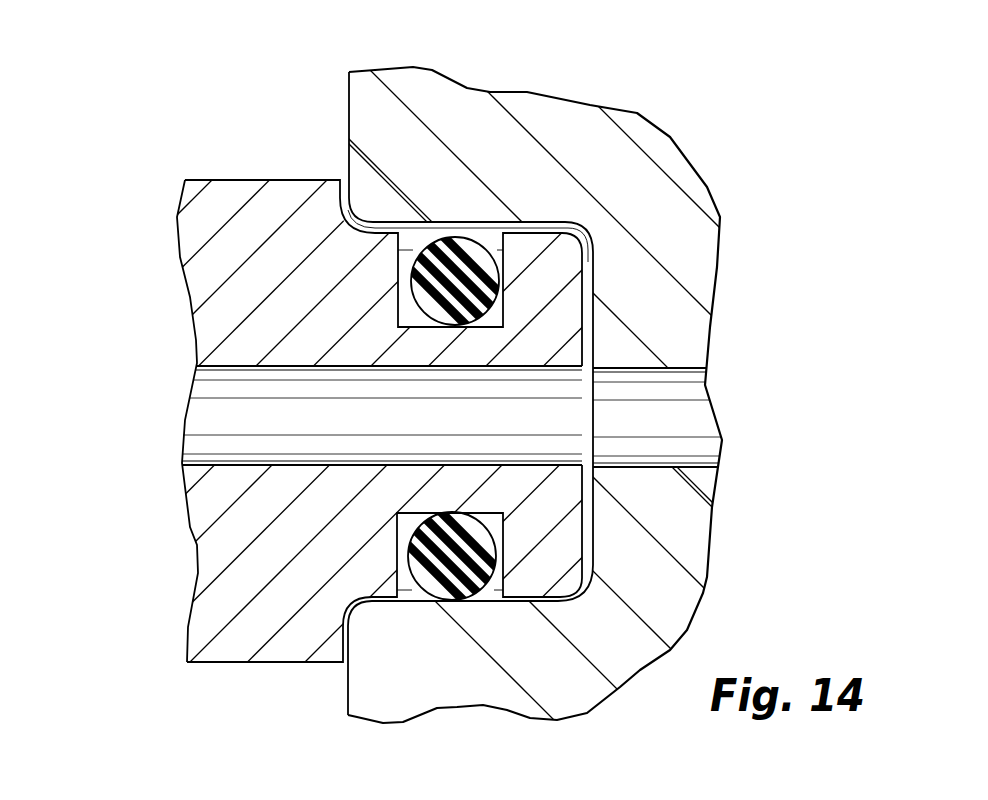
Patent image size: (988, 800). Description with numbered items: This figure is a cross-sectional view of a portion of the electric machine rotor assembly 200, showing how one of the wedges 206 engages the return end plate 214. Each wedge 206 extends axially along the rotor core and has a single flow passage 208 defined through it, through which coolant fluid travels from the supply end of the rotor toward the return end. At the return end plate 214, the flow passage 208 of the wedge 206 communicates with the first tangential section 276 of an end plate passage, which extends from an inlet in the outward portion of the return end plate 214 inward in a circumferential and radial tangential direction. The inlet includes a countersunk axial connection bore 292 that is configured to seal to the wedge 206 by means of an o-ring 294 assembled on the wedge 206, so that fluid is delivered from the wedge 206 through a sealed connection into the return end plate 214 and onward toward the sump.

The electric machine rotor assembly 200 is at (186, 84).
The wedge 206 is at (232, 198).
The return end plate 214 is at (349, 118).
The flow passage 208 is at (200, 413).
The first tangential section 276 is at (698, 420).
The countersunk axial connection bore 292 is at (455, 240).
The o-ring 294 is at (438, 575).